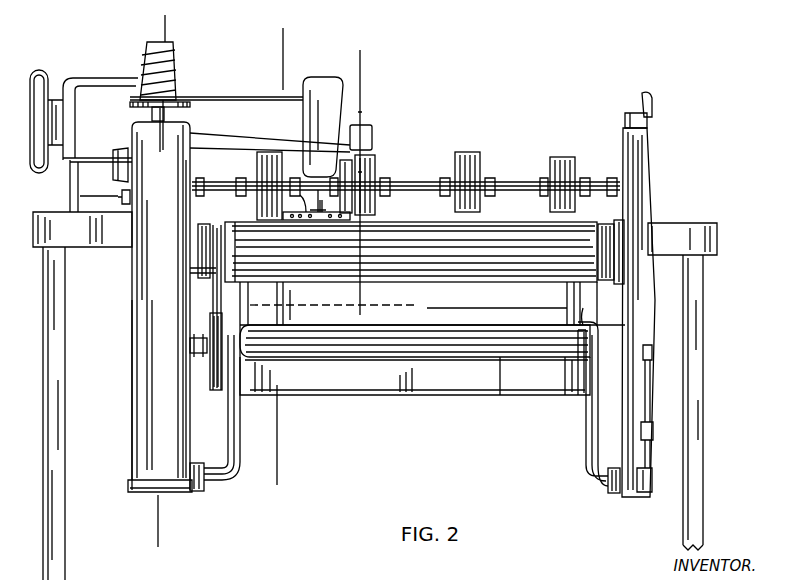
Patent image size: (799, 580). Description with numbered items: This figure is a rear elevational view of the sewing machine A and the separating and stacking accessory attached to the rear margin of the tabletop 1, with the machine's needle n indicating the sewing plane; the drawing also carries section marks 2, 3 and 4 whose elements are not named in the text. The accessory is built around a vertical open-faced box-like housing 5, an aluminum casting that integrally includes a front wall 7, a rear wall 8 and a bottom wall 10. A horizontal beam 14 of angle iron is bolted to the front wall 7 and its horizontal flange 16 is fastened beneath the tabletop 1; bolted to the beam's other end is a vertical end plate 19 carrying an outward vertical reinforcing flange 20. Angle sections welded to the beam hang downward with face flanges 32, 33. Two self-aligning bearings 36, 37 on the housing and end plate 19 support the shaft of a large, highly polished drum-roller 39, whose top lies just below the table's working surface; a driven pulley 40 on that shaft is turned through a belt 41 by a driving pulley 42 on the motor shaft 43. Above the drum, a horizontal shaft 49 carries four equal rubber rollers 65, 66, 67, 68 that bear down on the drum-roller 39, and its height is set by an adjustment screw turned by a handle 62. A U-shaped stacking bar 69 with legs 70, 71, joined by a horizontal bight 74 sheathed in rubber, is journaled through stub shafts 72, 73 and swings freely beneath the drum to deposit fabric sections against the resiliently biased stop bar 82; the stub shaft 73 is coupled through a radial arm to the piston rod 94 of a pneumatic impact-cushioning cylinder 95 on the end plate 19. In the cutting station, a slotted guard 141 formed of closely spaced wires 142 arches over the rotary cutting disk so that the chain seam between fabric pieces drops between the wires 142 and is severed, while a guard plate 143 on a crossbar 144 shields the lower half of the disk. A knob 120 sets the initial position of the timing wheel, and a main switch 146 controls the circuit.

The sewing machine A is at (86, 76).
The tabletop 1 is at (672, 228).
The table legs 2 is at (46, 448).
The section line 3- 3 is at (286, 33).
The thread spool 4 is at (148, 58).
The box-like housing 5 is at (128, 382).
The front wall 7 is at (137, 437).
The rear wall 8 is at (152, 116).
The bottom wall 10 is at (166, 490).
The horizontal beam 14 is at (599, 325).
The horizontal flange 16 is at (364, 113).
The end plate 19 is at (652, 158).
The vertical reinforcing flange 20 is at (641, 289).
The face flange 32 is at (567, 302).
The face flange 33 is at (265, 303).
The self-aligning bearing 36 is at (198, 240).
The self-aligning bearing 37 is at (614, 238).
The drum-roller 39 is at (492, 279).
The driven pulley 40 is at (212, 272).
The belt 41 is at (215, 298).
The driving pulley 42 is at (222, 388).
The motor shaft 43 is at (195, 334).
The horizontal shaft 49 is at (526, 180).
The handle 62 is at (656, 108).
The rubber roller 65 is at (564, 158).
The rubber roller 66 is at (468, 150).
The rubber roller 67 is at (374, 162).
The rubber roller 68 is at (257, 163).
The stacking bar 69 is at (245, 460).
The leg 70 is at (230, 428).
The leg 71 is at (586, 425).
The stub shaft 72 is at (223, 485).
The stub shaft 73 is at (606, 484).
The horizontal bight 74 is at (578, 392).
The stop bar 82 is at (504, 386).
The piston rod 94 is at (648, 455).
The pneumatic impact-cushioning cylinder 95 is at (650, 412).
The knob 120 is at (120, 150).
The slotted guard 141 is at (262, 208).
The wires 142 is at (305, 224).
The guard plate 143 is at (388, 396).
The crossbar 144 is at (470, 394).
The main switch 146 is at (120, 196).
The needle n is at (321, 222).